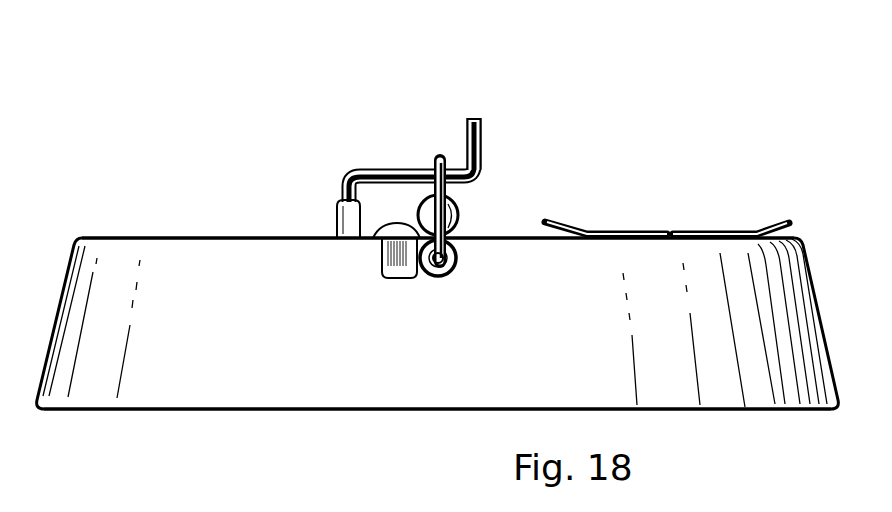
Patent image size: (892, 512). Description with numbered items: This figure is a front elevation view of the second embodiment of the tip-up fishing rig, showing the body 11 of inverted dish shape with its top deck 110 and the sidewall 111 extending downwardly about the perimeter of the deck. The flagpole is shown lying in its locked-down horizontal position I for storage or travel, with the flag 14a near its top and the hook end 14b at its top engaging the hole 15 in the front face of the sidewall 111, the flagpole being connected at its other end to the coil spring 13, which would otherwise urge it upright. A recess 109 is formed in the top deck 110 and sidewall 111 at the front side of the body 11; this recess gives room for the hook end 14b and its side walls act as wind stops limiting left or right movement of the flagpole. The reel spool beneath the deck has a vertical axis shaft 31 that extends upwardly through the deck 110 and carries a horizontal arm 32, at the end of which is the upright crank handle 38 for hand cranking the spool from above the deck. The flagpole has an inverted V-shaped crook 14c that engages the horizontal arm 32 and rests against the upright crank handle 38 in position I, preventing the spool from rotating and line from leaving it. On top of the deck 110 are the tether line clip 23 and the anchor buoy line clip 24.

The body 11 is at (155, 195).
The top deck 110 is at (253, 237).
The sidewall 111 is at (240, 380).
The coil spring 13 is at (373, 238).
The flag 14a is at (458, 215).
The hook end 14b is at (455, 247).
The inverted V-shaped crook 14c is at (434, 165).
The hole 15 is at (455, 278).
The tether line clip 23 is at (743, 228).
The anchor buoy line clip 24 is at (623, 228).
The vertical axis shaft 31 is at (338, 206).
The horizontal arm 32 is at (397, 170).
The upright crank handle 38 is at (476, 138).
The recess 109 is at (402, 258).
The locked-down horizontal position I is at (502, 80).